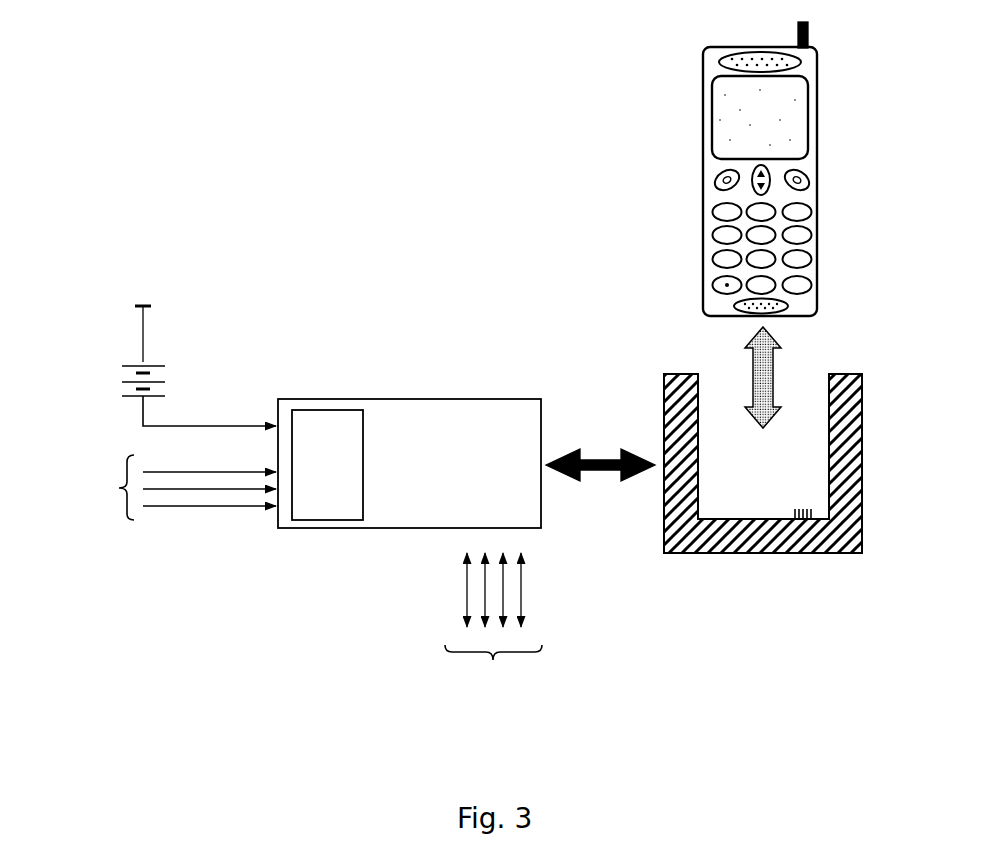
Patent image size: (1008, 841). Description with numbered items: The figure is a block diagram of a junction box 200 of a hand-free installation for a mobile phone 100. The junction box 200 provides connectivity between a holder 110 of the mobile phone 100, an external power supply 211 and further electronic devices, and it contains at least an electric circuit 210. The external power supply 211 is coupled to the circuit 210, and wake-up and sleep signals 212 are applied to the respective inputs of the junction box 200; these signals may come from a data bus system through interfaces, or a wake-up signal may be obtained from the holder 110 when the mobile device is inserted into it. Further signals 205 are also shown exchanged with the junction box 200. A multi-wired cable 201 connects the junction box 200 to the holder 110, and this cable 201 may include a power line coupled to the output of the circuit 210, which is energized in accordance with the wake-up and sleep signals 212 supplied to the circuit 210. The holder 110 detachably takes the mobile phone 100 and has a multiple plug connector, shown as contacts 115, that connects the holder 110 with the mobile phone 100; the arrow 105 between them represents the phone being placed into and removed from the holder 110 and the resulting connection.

The mobile phone 100 is at (749, 161).
The bidirectional communication between phone and cradle 105 is at (791, 351).
The holder 110 is at (763, 486).
The contacts 115 is at (765, 491).
The junction box 200 is at (409, 443).
The multi-wired cable 201 is at (602, 451).
The further signals 205 is at (460, 590).
The electric circuit 210 is at (371, 465).
The external power supply 211 is at (199, 366).
The wake-up and sleep signals 212 is at (203, 518).